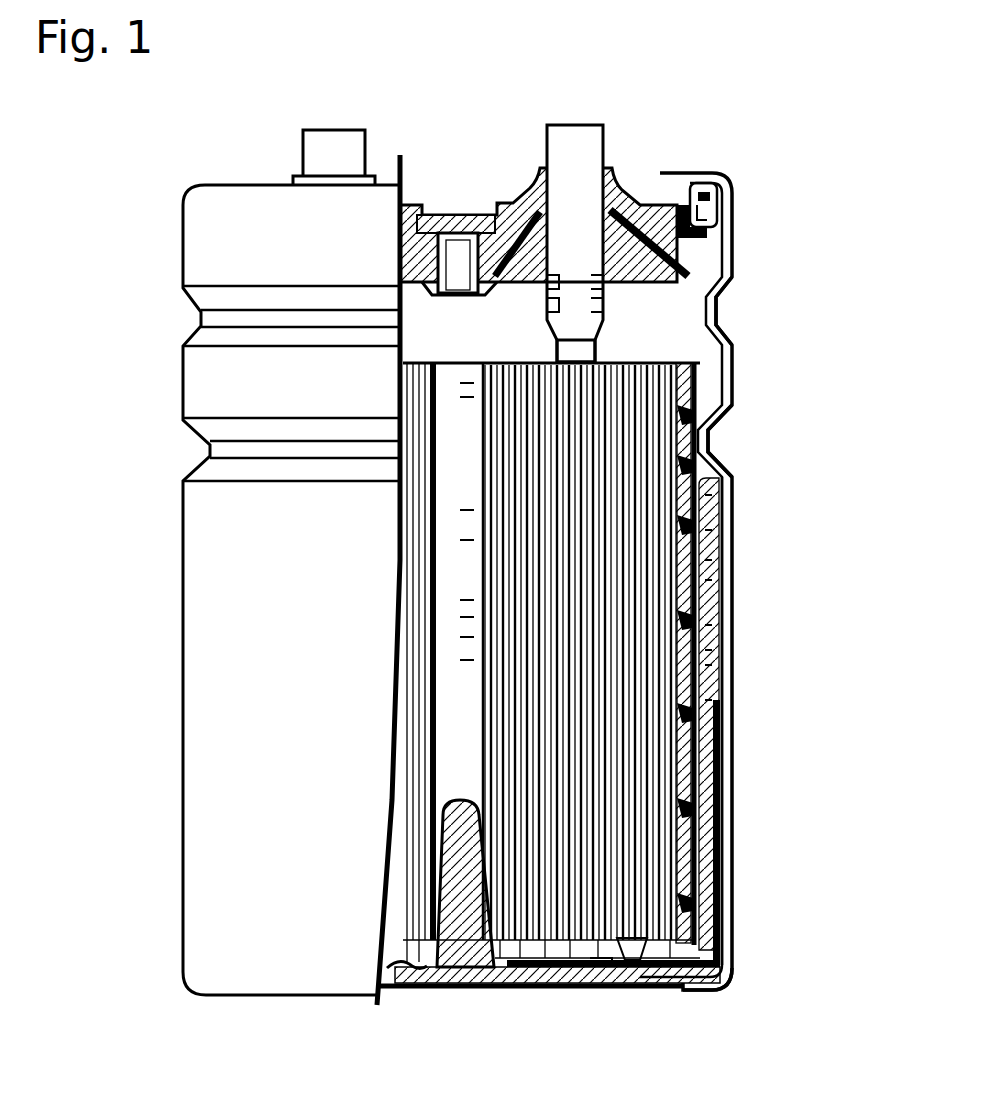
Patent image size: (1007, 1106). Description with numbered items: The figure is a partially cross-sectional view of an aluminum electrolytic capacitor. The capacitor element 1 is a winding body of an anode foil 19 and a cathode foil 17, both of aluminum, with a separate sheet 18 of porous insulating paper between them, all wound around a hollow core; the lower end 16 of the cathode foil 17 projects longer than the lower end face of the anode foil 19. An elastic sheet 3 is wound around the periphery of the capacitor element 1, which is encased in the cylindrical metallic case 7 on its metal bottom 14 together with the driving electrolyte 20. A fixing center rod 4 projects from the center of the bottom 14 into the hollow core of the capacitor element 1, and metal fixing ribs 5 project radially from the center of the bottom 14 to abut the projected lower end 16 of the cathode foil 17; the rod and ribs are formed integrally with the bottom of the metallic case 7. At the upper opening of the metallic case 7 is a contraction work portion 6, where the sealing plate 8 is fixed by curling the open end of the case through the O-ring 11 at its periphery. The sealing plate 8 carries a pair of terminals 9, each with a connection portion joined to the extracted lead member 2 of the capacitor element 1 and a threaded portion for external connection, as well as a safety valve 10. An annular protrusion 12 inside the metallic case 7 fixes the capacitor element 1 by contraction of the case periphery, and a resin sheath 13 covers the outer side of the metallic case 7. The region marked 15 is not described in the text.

The capacitor element 1 is at (733, 645).
The extracted lead member 2 is at (565, 355).
The elastic sheet 3 is at (690, 587).
The fixing center rod 4 is at (467, 930).
The fixing ribs 5 is at (400, 975).
The contraction work portion 6 is at (717, 310).
The metallic case 7 is at (725, 560).
The sealing plate 8 is at (628, 208).
The terminals 9 is at (330, 137).
The safety valve 10 is at (455, 215).
The O-ring 11 is at (705, 222).
The annular protrusion 12 is at (710, 440).
The resin sheath 13 is at (740, 960).
The bottom 14 is at (545, 963).
The separator 15 is at (455, 690).
The lower end of the cathode foil 16 is at (630, 940).
The cathode foil 17 is at (650, 905).
The separate sheet 18 is at (665, 703).
The anode foil 19 is at (670, 781).
The driving electrolyte 20 is at (710, 503).